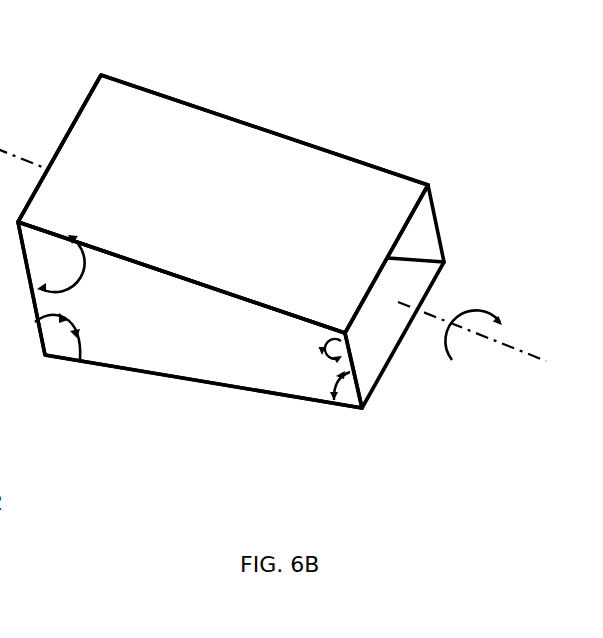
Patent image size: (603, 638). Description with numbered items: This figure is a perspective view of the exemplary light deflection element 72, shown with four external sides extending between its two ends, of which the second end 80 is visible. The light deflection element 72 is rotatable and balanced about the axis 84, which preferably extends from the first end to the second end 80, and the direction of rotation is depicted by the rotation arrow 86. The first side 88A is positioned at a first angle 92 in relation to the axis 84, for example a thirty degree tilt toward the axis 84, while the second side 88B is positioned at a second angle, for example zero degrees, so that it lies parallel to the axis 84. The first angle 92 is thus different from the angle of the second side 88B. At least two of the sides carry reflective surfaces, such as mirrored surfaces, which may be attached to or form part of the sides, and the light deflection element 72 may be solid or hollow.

The light deflection element 72 is at (280, 38).
The second end 80 is at (412, 247).
The axis 84 is at (525, 352).
The rotation arrow 86 is at (450, 368).
The first side 88A is at (270, 173).
The second side 88B is at (205, 355).
The first angle 92 is at (326, 348).